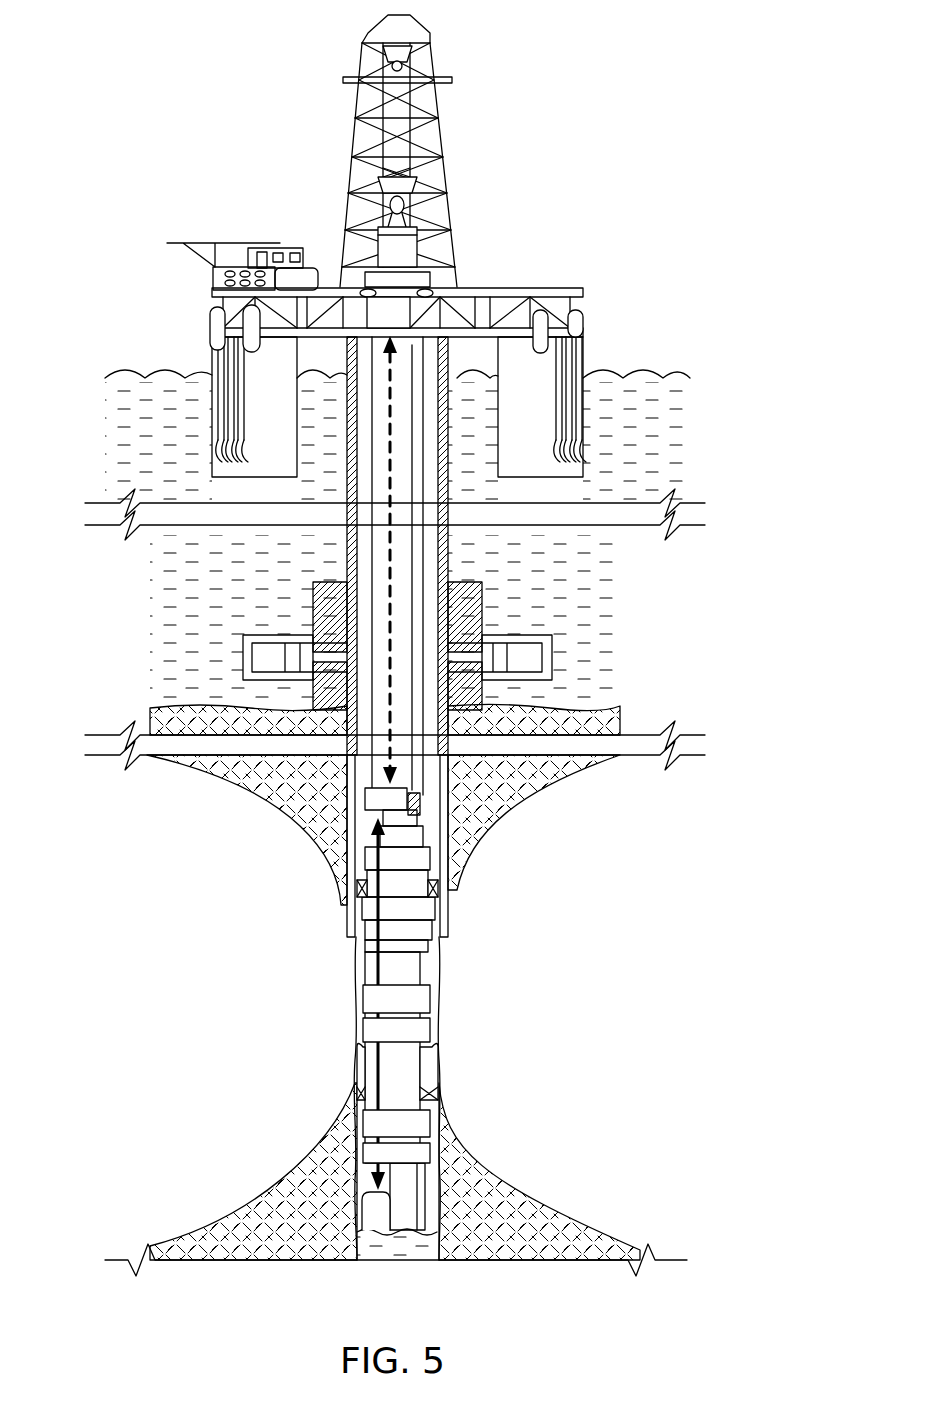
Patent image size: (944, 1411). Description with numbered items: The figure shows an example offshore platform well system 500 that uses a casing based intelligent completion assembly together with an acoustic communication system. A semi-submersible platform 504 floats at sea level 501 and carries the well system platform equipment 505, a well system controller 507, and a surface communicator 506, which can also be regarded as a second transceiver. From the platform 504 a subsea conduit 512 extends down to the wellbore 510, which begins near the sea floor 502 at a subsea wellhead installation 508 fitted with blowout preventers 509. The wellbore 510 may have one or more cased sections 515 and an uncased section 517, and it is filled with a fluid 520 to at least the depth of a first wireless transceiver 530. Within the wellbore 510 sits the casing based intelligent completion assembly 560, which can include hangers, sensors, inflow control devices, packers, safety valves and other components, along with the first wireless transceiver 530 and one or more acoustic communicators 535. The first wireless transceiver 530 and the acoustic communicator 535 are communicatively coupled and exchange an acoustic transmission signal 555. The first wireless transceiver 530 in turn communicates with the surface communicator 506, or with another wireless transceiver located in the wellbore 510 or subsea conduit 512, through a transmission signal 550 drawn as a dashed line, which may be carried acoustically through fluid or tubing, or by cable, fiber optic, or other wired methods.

The offshore platform well system 500 is at (183, 88).
The sea level 501 is at (619, 383).
The sea floor 502 is at (160, 706).
The semi-submersible platform 504 is at (200, 320).
The well system platform equipment 505 is at (452, 160).
The surface communicator 506 is at (336, 285).
The well system controller 507 is at (326, 290).
The subsea wellhead installation 508 is at (300, 620).
The blowout preventers 509 is at (528, 650).
The wellbore 510 is at (338, 845).
The subsea conduit 512 is at (430, 553).
The cased section 515 is at (347, 922).
The uncased section 517 is at (360, 1010).
The fluid 520 is at (450, 813).
The first wireless transceiver 530 is at (365, 796).
The acoustic communicator 535 is at (367, 1213).
The transmission signal 550 is at (392, 540).
The acoustic transmission signal 555 is at (367, 1003).
The casing based intelligent completion assembly 560 is at (443, 858).